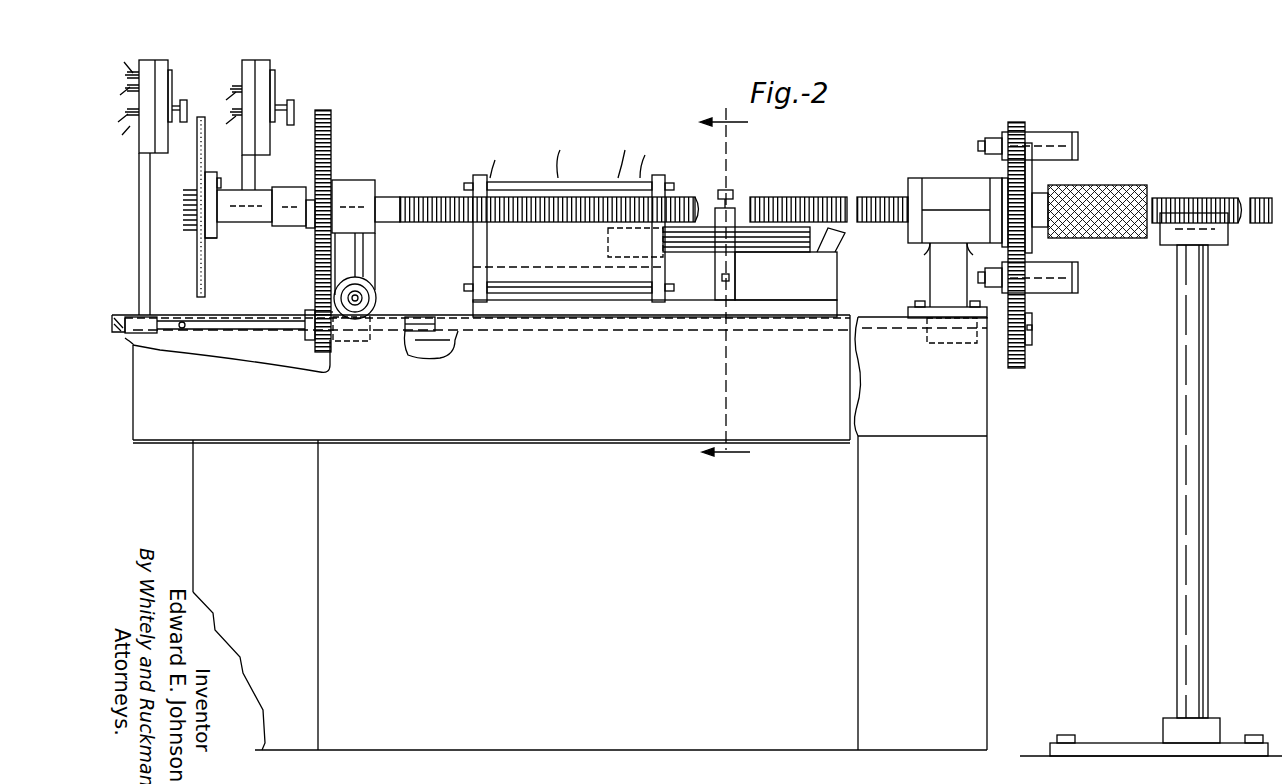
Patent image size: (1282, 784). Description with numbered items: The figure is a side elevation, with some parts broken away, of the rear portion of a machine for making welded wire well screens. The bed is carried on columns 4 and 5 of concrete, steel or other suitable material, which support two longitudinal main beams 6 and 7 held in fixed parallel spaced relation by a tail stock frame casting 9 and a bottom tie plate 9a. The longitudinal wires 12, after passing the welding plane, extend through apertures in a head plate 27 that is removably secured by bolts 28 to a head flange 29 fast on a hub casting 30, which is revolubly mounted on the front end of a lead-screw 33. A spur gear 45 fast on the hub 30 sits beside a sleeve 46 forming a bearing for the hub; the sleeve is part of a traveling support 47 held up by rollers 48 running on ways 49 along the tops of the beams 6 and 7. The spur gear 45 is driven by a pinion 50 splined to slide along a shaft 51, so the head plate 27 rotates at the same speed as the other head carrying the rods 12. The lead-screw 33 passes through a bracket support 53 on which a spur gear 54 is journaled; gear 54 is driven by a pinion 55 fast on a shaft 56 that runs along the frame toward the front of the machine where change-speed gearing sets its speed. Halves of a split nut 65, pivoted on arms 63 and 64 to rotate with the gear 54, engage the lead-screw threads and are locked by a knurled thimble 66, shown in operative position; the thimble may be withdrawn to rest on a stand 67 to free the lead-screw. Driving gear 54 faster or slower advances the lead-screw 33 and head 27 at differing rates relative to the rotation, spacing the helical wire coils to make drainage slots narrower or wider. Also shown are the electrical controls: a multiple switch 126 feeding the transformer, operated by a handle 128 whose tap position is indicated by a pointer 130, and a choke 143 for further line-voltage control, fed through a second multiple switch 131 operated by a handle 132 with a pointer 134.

The column 4 is at (318, 567).
The column 5 is at (985, 500).
The longitudinal main beam 6 is at (155, 455).
The longitudinal main beam 7 is at (423, 352).
The tail stock frame casting 9 is at (948, 313).
The bottom tie plate 9a is at (478, 447).
The wires 12 is at (183, 233).
The head plate 27 is at (197, 178).
The bolts 28 is at (221, 238).
The head flange 29 is at (213, 172).
The hub casting 30 is at (262, 190).
The lead-screw 33 is at (430, 197).
The spur gear 45 is at (333, 120).
The sleeve 46 is at (364, 182).
The traveling support 47 is at (368, 250).
The rollers 48 is at (360, 298).
The ways 49 is at (420, 317).
The pinion 50 is at (330, 368).
The shaft 51 is at (125, 340).
The bracket support 53 is at (935, 186).
The spur gear 54 is at (1020, 122).
The pinion 55 is at (1027, 360).
The shaft 56 is at (177, 325).
The arm 63 is at (1032, 176).
The arm 64 is at (1032, 252).
The split nut 65 is at (1155, 197).
The knurled thimble 66 is at (1130, 185).
The stand 67 is at (1165, 247).
The multiple switch 126 is at (163, 62).
The handle 128 is at (184, 100).
The pointer 130 is at (172, 95).
The multiple switch 131 is at (262, 64).
The handle 132 is at (293, 100).
The pointer 134 is at (278, 90).
The choke 143 is at (520, 182).